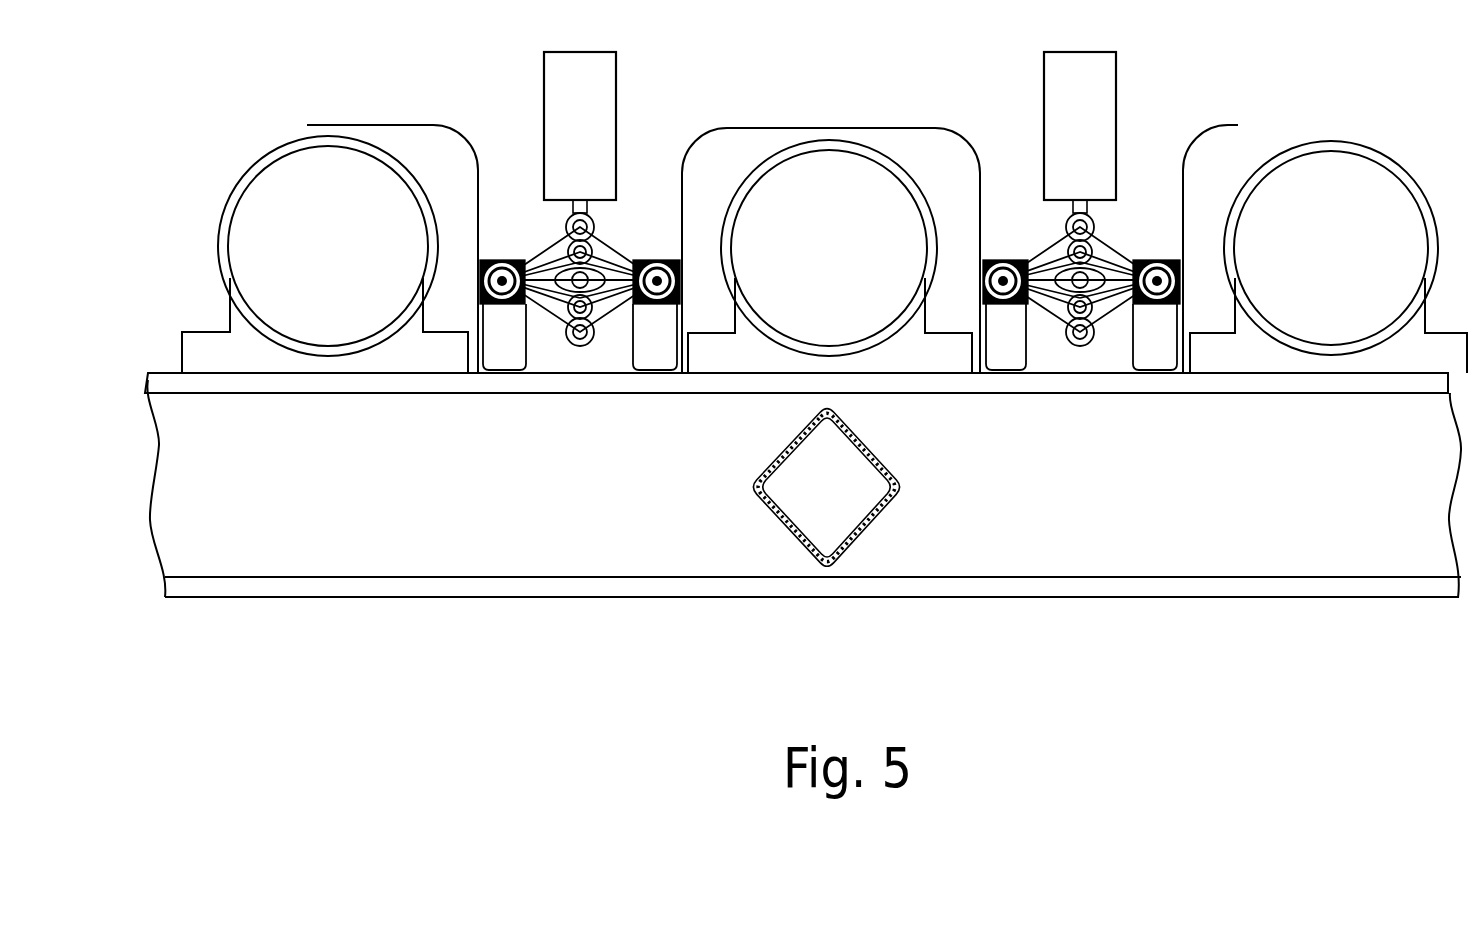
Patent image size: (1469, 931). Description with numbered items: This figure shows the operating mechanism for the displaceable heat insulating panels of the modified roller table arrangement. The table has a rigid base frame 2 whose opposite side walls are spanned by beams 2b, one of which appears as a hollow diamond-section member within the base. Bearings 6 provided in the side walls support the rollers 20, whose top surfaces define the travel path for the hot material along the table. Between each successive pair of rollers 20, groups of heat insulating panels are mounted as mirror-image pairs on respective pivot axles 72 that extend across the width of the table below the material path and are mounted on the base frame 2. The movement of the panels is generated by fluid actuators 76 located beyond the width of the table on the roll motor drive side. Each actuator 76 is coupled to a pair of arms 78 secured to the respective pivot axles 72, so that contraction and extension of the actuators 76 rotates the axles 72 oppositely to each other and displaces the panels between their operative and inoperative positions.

The base frame 2 is at (482, 497).
The beams 2b is at (893, 508).
The bearings 6 is at (747, 137).
The rollers 20 is at (262, 182).
The pivot axles 72 is at (501, 260).
The fluid actuators 76 is at (598, 85).
The arms 78 is at (608, 235).